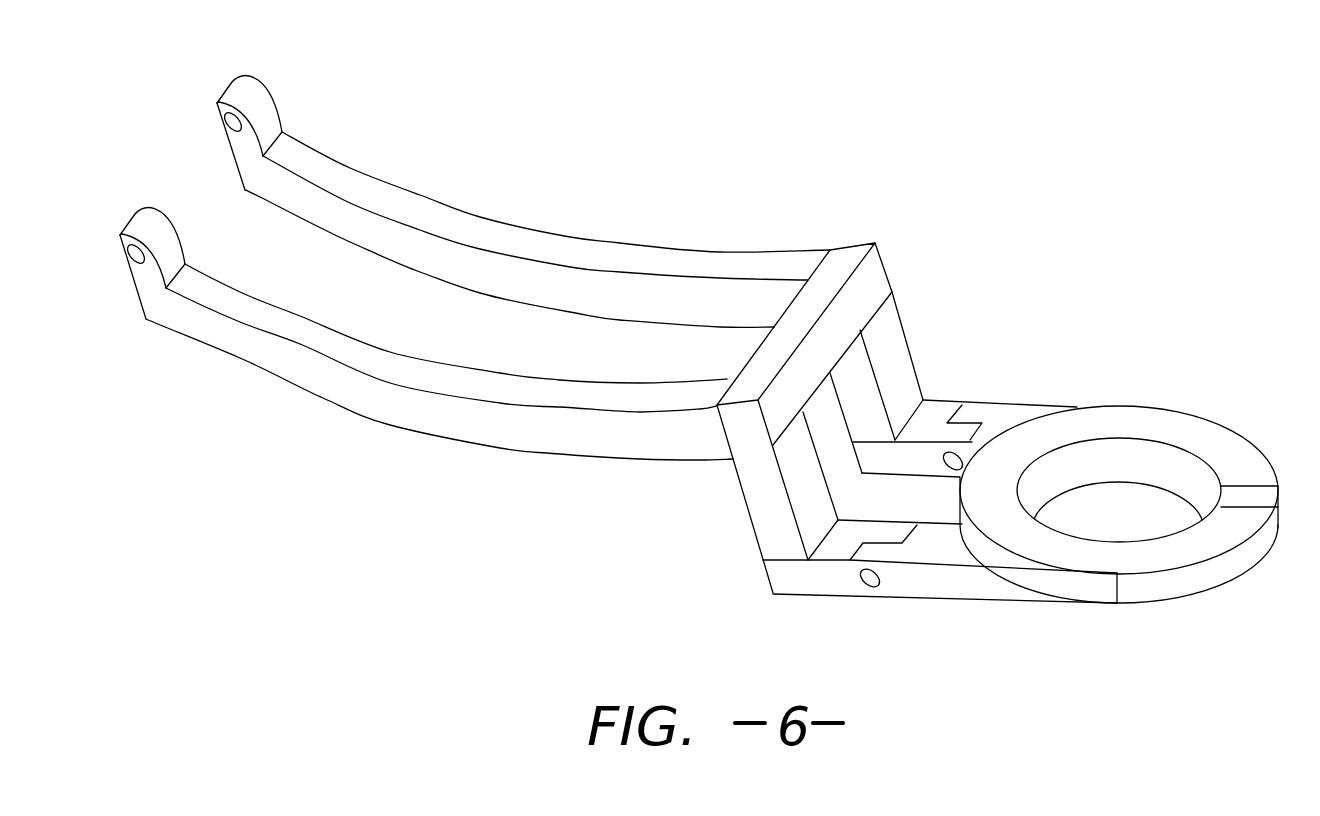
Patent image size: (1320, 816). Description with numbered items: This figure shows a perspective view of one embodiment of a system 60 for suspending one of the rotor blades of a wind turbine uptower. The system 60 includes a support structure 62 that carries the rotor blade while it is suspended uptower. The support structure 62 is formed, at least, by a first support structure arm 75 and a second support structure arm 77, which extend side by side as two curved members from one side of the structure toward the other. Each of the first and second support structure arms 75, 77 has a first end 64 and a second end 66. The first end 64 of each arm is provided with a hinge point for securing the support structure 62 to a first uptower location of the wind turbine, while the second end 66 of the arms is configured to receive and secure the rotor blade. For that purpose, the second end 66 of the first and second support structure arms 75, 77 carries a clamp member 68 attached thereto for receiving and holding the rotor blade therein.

The system 60 is at (1140, 245).
The support structure 62 is at (845, 224).
The first end 64 is at (243, 92).
The second end 66 is at (1130, 406).
The clamp member 68 is at (1215, 445).
The first support structure arm 75 is at (372, 398).
The second support structure arm 77 is at (495, 235).